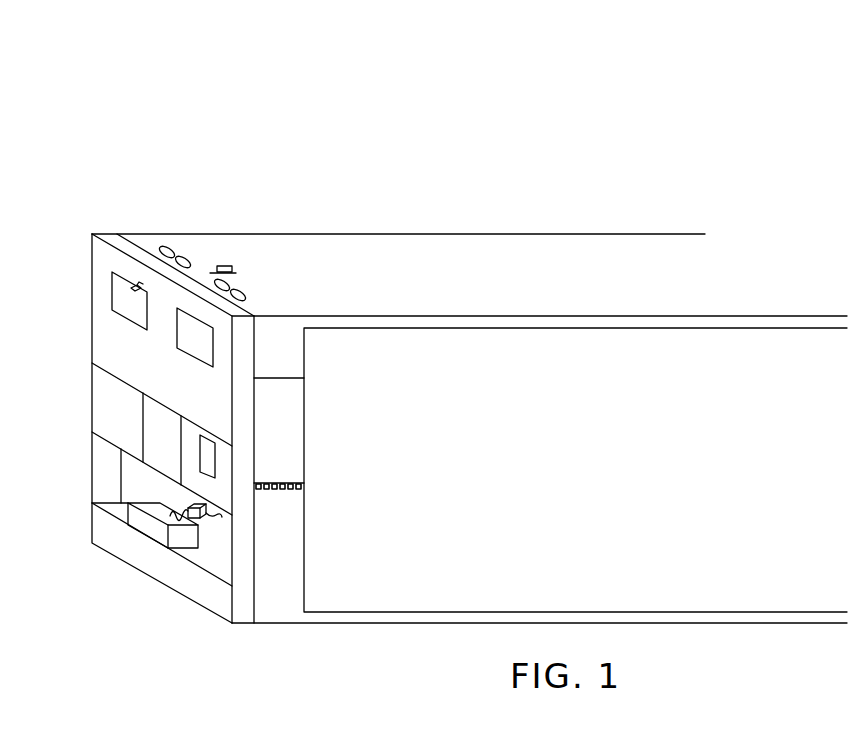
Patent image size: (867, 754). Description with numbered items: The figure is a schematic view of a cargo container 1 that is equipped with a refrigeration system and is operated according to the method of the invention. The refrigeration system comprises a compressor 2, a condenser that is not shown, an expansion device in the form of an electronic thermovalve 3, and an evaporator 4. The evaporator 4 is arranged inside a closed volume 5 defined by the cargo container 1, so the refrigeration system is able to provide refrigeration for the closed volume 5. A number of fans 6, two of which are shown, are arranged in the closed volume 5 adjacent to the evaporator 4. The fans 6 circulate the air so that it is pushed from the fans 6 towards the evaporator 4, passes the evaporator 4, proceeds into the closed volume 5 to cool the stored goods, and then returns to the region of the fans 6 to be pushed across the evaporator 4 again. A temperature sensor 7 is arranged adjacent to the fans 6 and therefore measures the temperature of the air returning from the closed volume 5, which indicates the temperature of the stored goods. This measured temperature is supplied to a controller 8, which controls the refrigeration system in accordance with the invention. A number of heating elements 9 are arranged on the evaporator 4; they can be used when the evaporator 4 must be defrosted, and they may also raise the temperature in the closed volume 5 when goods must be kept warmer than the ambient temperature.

The cargo container 1 is at (621, 125).
The compressor 2 is at (152, 525).
The electronic thermovalve 3 is at (198, 519).
The evaporator 4 is at (270, 443).
The closed volume 5 is at (554, 488).
The fans 6 is at (174, 250).
The temperature sensor 7 is at (229, 267).
The controller 8 is at (206, 457).
The heating elements 9 is at (290, 490).